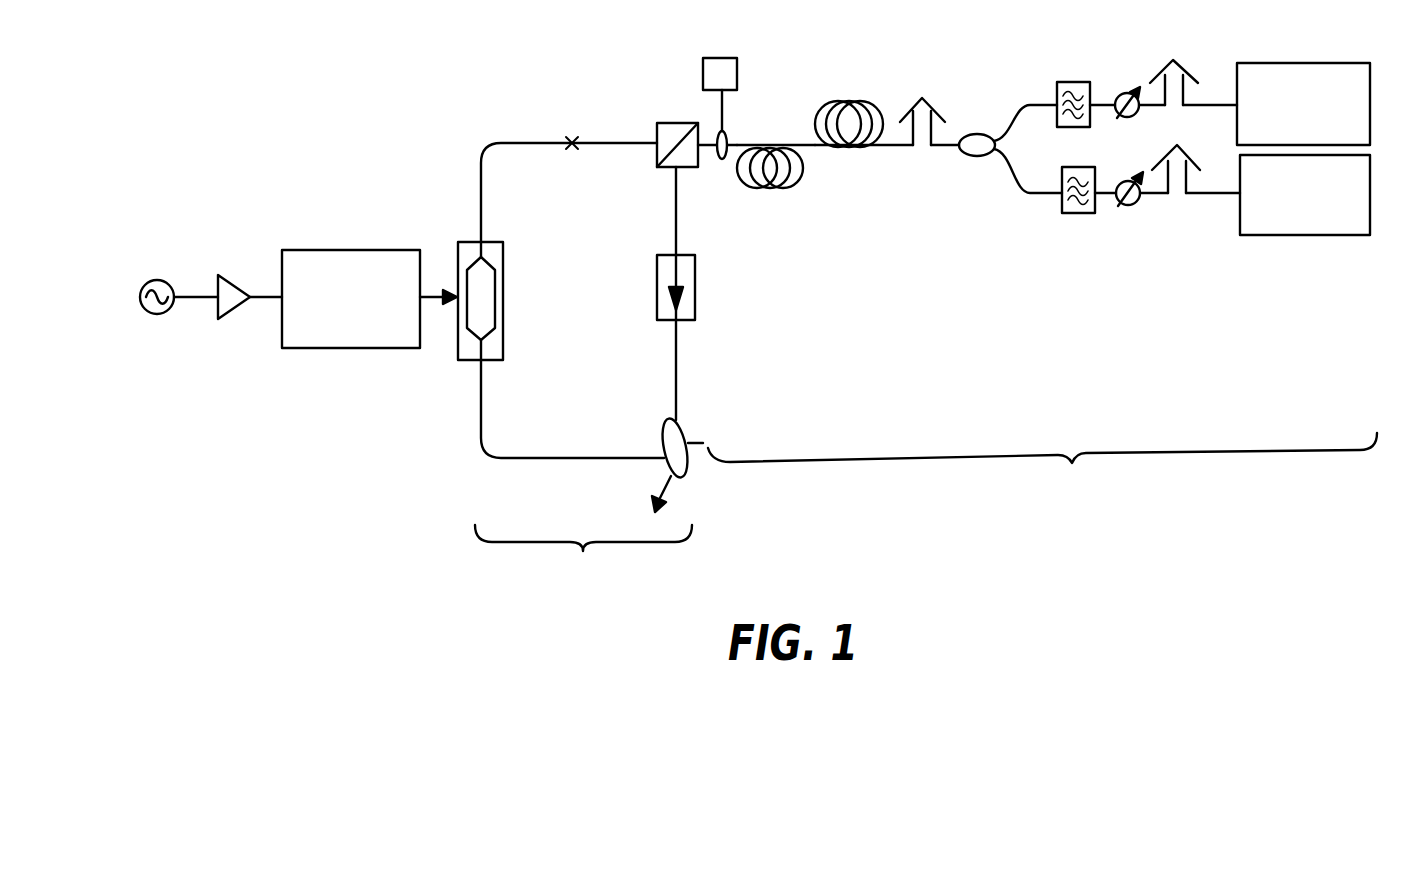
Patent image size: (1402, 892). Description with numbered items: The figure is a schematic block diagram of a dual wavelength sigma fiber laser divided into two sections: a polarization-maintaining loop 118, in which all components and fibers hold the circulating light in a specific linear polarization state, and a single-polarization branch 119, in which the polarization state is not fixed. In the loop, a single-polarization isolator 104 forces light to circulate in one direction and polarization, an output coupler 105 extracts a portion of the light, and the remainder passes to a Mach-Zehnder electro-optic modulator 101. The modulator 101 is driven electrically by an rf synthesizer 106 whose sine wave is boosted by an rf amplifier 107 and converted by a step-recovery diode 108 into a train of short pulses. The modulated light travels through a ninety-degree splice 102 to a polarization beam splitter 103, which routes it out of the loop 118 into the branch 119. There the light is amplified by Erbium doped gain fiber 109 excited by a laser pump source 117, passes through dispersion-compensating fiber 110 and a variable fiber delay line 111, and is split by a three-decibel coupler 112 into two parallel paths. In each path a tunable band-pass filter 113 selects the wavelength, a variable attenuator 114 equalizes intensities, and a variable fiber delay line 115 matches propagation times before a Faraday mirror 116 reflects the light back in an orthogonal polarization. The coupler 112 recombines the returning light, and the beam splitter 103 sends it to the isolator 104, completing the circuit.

The modulator 101 is at (504, 343).
The 90-degree splice 102 is at (569, 152).
The polarization beam splitter 103 is at (669, 121).
The single-polarization isolator 104 is at (696, 292).
The output coupler 105 is at (684, 432).
The rf synthesizer 106 is at (157, 280).
The rf amplifier 107 is at (226, 320).
The step-recovery diode 108 is at (369, 299).
The Erbium doped gain fiber 109 is at (788, 190).
The dispersion-compensating fiber 110 is at (843, 90).
The variable fiber delay line 111 is at (912, 170).
The 3-dB coupler 112 is at (978, 157).
The tunable band-pass filter 113 is at (1063, 230).
The variable attenuator 114 is at (1113, 72).
The variable fiber delay line 115 is at (1181, 212).
The Faraday mirror 116 is at (1303, 149).
The laser pump source 117 is at (730, 56).
The polarization-maintaining loop 118 is at (583, 556).
The single-polarization branch 119 is at (1042, 467).